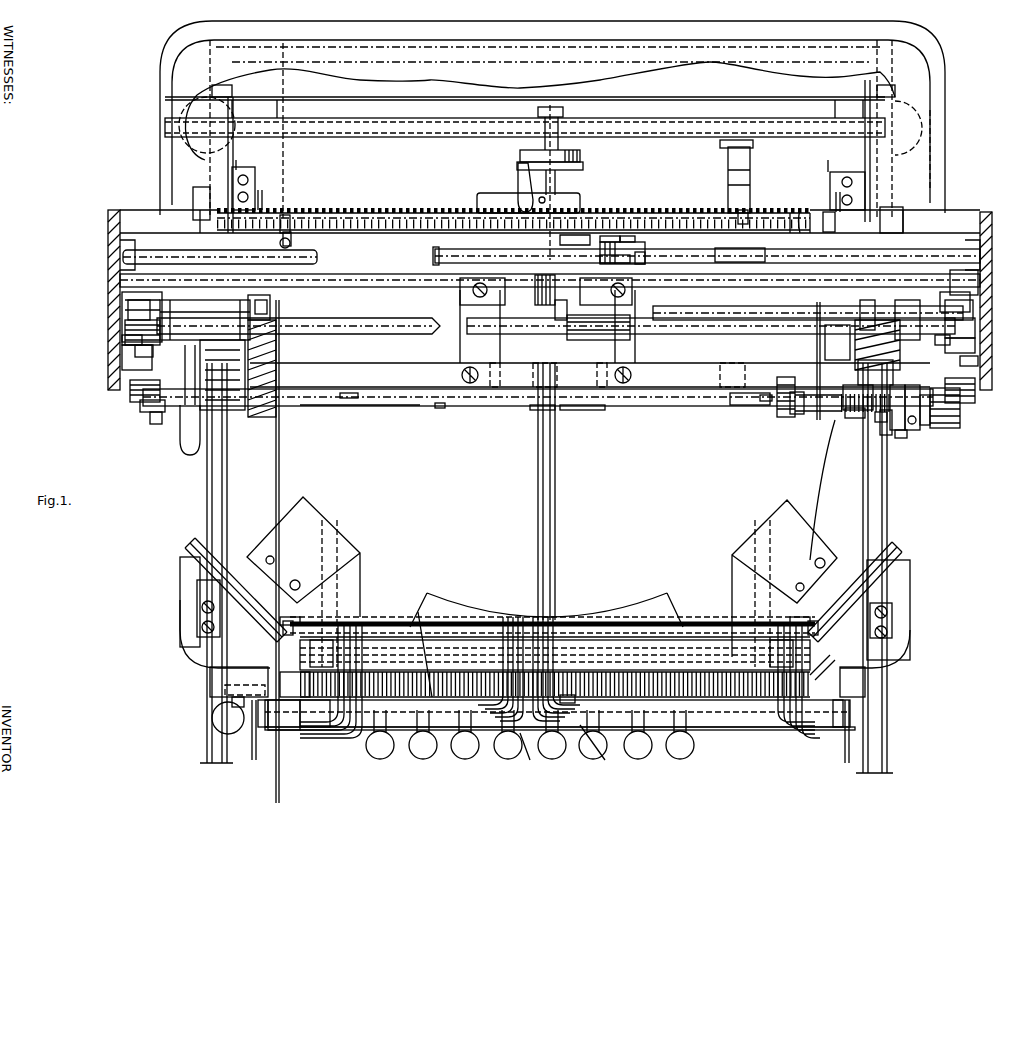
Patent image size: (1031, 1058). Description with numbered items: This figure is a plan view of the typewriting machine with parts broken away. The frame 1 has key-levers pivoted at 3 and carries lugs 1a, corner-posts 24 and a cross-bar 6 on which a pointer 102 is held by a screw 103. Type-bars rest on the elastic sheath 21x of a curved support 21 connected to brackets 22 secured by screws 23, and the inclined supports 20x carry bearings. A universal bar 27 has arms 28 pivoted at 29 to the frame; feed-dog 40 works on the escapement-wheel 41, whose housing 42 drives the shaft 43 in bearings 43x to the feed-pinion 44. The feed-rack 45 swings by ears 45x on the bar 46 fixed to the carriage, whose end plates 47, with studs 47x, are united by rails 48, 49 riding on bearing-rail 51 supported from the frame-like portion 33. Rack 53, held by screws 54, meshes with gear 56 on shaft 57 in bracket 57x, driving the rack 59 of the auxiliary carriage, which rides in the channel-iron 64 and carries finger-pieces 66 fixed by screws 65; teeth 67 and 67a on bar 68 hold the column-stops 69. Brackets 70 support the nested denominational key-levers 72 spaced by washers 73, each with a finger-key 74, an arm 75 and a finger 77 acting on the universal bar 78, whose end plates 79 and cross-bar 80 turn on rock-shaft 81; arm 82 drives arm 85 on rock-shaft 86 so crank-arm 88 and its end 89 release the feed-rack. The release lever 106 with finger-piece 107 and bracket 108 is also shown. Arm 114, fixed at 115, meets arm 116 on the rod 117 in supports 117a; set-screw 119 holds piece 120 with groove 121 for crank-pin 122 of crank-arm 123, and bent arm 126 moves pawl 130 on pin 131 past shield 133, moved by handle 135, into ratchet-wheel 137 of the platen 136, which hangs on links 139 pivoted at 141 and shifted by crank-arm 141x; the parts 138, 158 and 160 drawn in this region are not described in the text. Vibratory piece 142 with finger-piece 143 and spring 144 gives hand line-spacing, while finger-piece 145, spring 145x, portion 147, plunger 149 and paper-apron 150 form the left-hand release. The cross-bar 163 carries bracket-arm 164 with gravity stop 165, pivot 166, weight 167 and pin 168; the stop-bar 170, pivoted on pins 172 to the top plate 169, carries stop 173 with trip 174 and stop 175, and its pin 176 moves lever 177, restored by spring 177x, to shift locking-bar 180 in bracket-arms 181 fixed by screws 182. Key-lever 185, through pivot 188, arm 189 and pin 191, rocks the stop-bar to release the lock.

The frame 1 is at (222, 493).
The lugs 1a is at (244, 168).
The pivot of key-levers 3 is at (837, 52).
The cross-bar 6 is at (557, 713).
The inclined brackets or supports 20x is at (450, 593).
The curved support 21 is at (196, 547).
The elastic sheath 21x is at (258, 576).
The brackets 22 is at (198, 602).
The screws 23 is at (895, 612).
The corner-posts 24 is at (180, 584).
The universal bar 27 is at (392, 265).
The rearwardly-extending arms 28 is at (863, 108).
The pivot of universal-bar arms 29 is at (215, 85).
The frame-like portion 33 is at (648, 352).
The feed-dog 40 is at (160, 266).
The escapement-wheel 41 is at (584, 167).
The housing 42 is at (581, 152).
The shaft 43 is at (557, 183).
The bearings 43x is at (606, 291).
The feed-pinion 44 is at (590, 375).
The feed-rack 45 is at (436, 336).
The ears 45x is at (582, 342).
The bar 46 is at (405, 335).
The end plates 47 is at (121, 290).
The fixed studs 47x is at (125, 313).
The rail or cross-bar 48 is at (550, 300).
The rail or cross-bar 49 is at (724, 375).
The bearing-rail 51 is at (805, 214).
The depending rack 53 is at (388, 407).
The screws 54 is at (360, 393).
The gear 56 is at (598, 408).
The shaft 57 is at (555, 535).
The bracket 57x is at (519, 408).
The rack 59 is at (305, 728).
The channel-iron 64 is at (215, 678).
The screws 65 is at (833, 702).
The finger-piece 66 is at (252, 760).
The teeth 67 is at (316, 713).
The vertically-disposed teeth 67a is at (832, 656).
The additional bar 68 is at (295, 684).
The column-stops 69 is at (418, 651).
The brackets 70 is at (313, 640).
The denominational key-levers 72 is at (362, 727).
The spacing sleeves and washers 73 is at (356, 640).
The finger-key 74 is at (392, 757).
The rearwardly-extending arms 75 is at (549, 625).
The finger 77 is at (510, 625).
The universal bar 78 is at (399, 622).
The end plates 79 is at (280, 642).
The cross-bar 80 is at (911, 668).
The rod or rock-shaft 81 is at (386, 638).
The rearwardly-directed arm 82 is at (836, 420).
The arm 85 is at (816, 352).
The rock-shaft 86 is at (751, 322).
The crank-arm 88 is at (538, 320).
The angular terminal portion 89 is at (563, 322).
The pointer 102 is at (567, 698).
The screw 103 is at (578, 751).
The carriage-release lever 106 is at (232, 690).
The finger-piece 107 is at (228, 718).
The bracket 108 is at (235, 700).
The arm 114 is at (765, 395).
The securing point of arm 115 is at (742, 406).
The laterally-extending arm 116 is at (783, 418).
The rod 117 is at (140, 410).
The supports 117a is at (880, 422).
The set-screw 119 is at (886, 432).
The laterally-projecting piece 120 is at (915, 428).
The groove 121 is at (909, 451).
The crank-pin 122 is at (898, 425).
The crank-arm 123 is at (927, 415).
The bent arm 126 is at (877, 345).
The line-spacing pawl 130 is at (858, 372).
The pin 131 is at (851, 405).
The shield 133 is at (862, 320).
The finger-piece or handle 135 is at (937, 428).
The platen 136 is at (272, 345).
The line-spacing ratchet-wheel 137 is at (905, 320).
The spring 138 is at (805, 412).
The links 139 is at (125, 328).
The pivot of links to platen-frame 141 is at (815, 392).
The crank-arm 141x is at (125, 338).
The vibratory piece 142 is at (988, 327).
The finger-piece 143 is at (866, 410).
The spring 144 is at (955, 343).
The finger-piece 145 is at (191, 455).
The spring 145x is at (183, 405).
The rearwardly-extending portion 147 is at (268, 372).
The plunger or rod 149 is at (205, 320).
The paper-apron 150 is at (205, 418).
The collar 158 is at (135, 351).
The shaft 160 is at (394, 287).
The cross-bar 163 is at (716, 262).
The upright bracket-arm 164 is at (654, 257).
The gravity stop or trip 165 is at (617, 245).
The pivot of gravity stop 166 is at (616, 286).
The depending weighted portion 167 is at (641, 262).
The pin 168 is at (636, 250).
The top plate 169 is at (916, 136).
The rack or stop bar 170 is at (362, 222).
The pins 172 is at (203, 200).
The combined trip or stop 173 is at (577, 200).
The cam-like trip portion 174 is at (575, 245).
The stop 175 is at (493, 262).
The pin 176 is at (748, 222).
The lever 177 is at (751, 172).
The spring 177x is at (754, 147).
The bar 180 is at (824, 217).
The depending bracket-arms 181 is at (263, 190).
The screws 182 is at (249, 180).
The margin-stop release key-lever 185 is at (280, 457).
The pivot of link to arm 188 is at (292, 245).
The arm 189 is at (292, 222).
The pin or crank-arm 191 is at (294, 212).